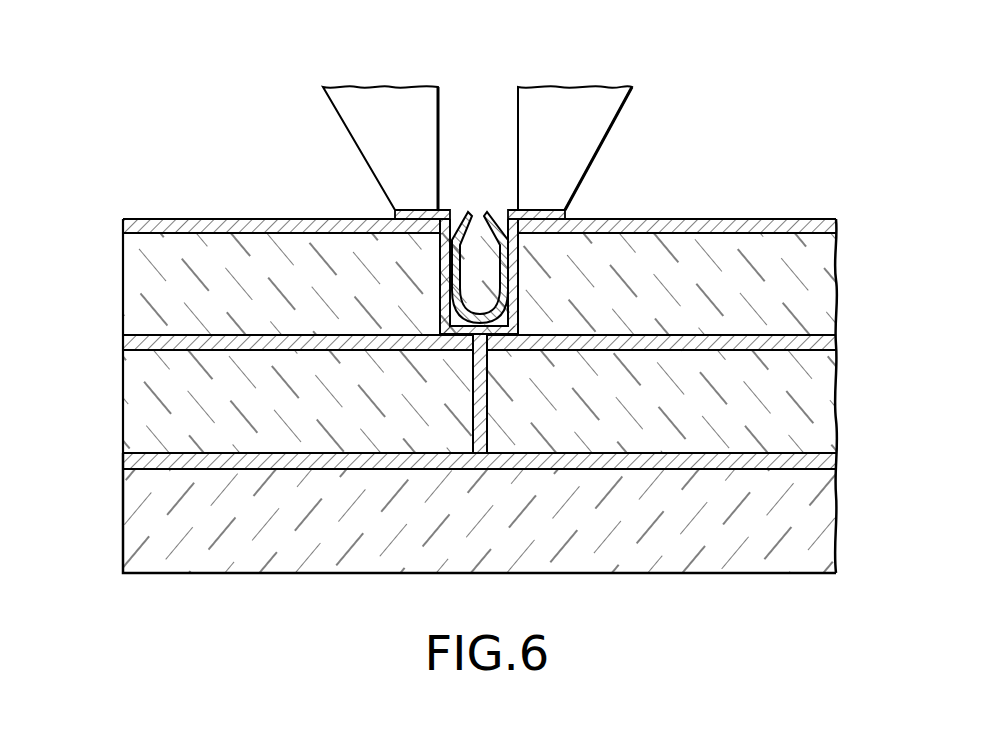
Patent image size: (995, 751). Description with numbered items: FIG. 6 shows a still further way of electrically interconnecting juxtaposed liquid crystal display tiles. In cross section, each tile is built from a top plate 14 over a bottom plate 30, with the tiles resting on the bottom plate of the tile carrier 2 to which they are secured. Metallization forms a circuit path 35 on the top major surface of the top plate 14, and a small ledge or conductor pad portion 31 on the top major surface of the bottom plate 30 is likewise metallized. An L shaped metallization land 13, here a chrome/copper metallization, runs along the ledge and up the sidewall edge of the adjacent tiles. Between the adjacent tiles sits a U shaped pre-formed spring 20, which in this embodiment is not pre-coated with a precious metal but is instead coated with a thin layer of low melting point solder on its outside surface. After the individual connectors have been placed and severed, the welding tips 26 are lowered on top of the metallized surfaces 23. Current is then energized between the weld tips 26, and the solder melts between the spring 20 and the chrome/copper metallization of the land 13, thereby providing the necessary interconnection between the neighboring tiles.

The bottom plate of the tile carrier 2 is at (702, 528).
The L shaped metallization land 13 is at (515, 298).
The top plate 14 is at (719, 299).
The U shaped pre-formed spring 20 is at (490, 215).
The metallized surfaces 23 is at (413, 210).
The welding tips 26 is at (562, 108).
The bottom plate 30 is at (721, 410).
The conductor pad portion 31 is at (452, 337).
The circuit path 35 is at (165, 219).